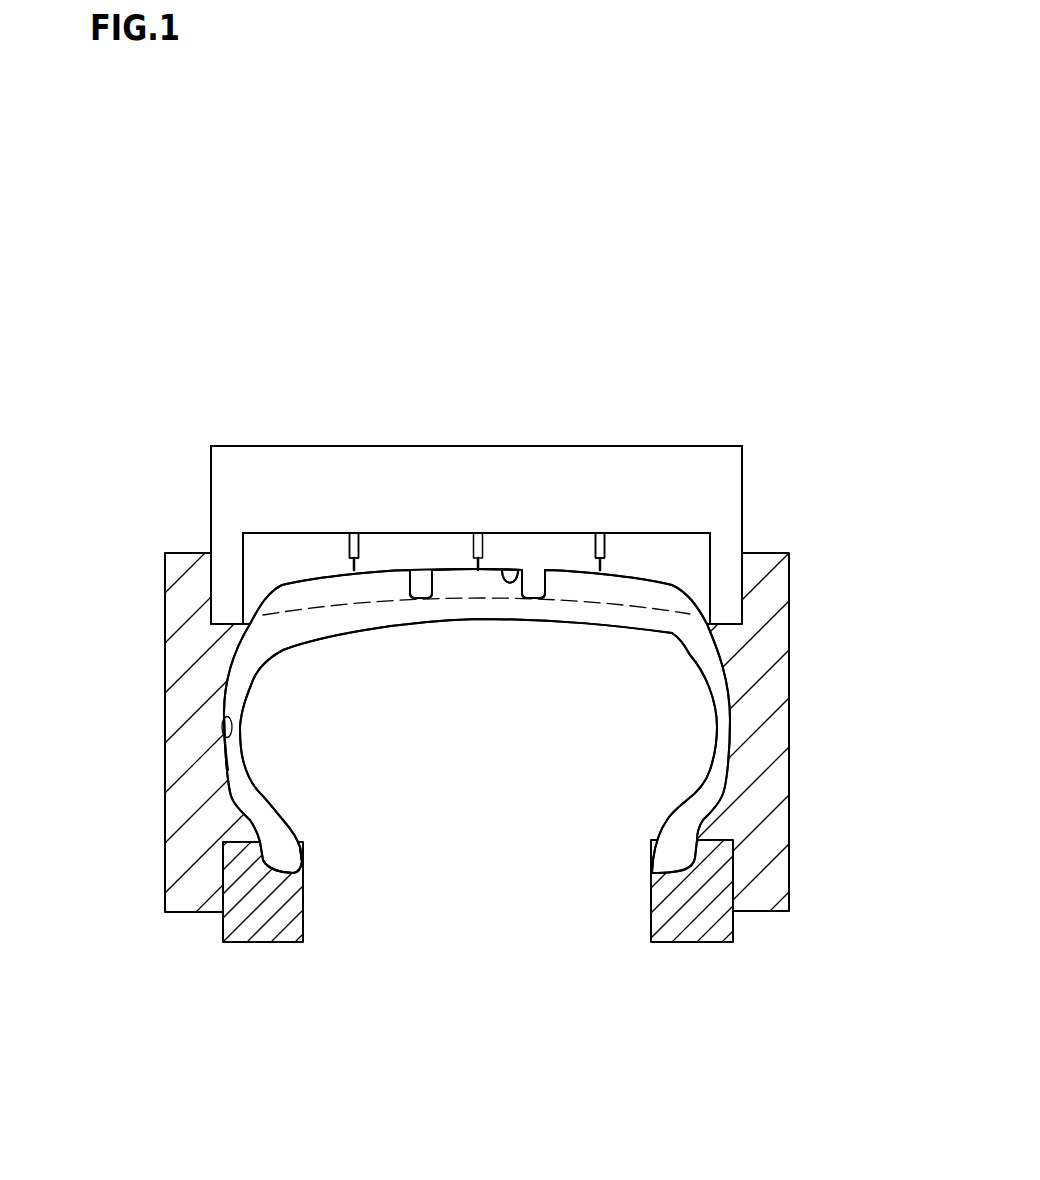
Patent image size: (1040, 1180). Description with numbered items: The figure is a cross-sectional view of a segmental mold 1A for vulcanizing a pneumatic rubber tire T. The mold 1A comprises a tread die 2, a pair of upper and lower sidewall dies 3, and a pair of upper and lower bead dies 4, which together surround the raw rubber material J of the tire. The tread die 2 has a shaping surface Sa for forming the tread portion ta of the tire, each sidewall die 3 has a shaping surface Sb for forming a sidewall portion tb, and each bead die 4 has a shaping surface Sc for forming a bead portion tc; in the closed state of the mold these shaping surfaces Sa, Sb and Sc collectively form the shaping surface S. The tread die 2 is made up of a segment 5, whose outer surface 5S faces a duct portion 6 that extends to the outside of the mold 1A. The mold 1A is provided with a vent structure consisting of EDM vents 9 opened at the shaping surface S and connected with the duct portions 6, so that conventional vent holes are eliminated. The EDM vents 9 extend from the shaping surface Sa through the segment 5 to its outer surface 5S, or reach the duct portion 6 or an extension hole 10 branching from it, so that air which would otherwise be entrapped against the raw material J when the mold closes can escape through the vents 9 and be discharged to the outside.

The mold 1A is at (833, 600).
The tread die 2 is at (260, 550).
The segment 5 is at (260, 550).
The outer surface of the segment 5S is at (307, 533).
The extension hole 10 is at (357, 545).
The duct portion 6 is at (357, 545).
The EDM vent 9 is at (605, 568).
The sidewall die 3 is at (177, 853).
The bead die 4 is at (240, 922).
The raw material J is at (717, 692).
The pneumatic rubber tire T is at (717, 692).
The tread portion ta is at (453, 568).
The tread shaping surface Sa is at (522, 569).
The shaping surface S is at (522, 569).
The sidewall portion tb is at (228, 720).
The sidewall shaping surface Sb is at (224, 740).
The bead portion tc is at (292, 874).
The bead shaping surface Sc is at (302, 863).